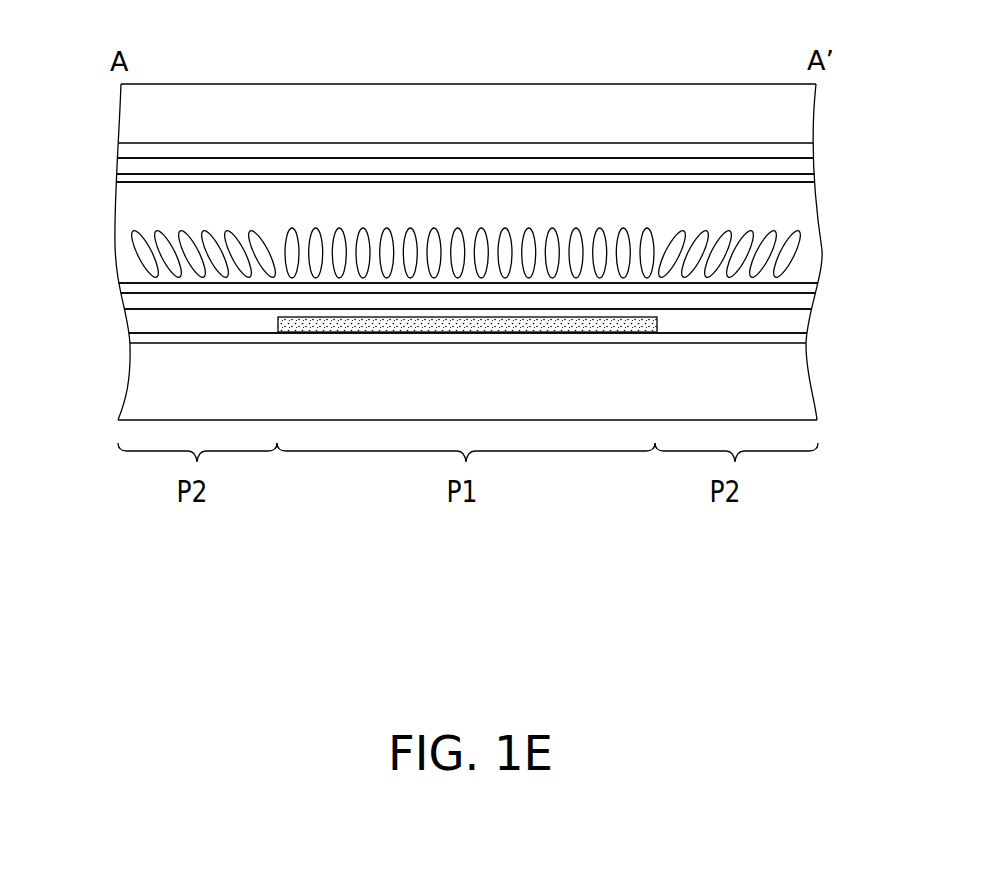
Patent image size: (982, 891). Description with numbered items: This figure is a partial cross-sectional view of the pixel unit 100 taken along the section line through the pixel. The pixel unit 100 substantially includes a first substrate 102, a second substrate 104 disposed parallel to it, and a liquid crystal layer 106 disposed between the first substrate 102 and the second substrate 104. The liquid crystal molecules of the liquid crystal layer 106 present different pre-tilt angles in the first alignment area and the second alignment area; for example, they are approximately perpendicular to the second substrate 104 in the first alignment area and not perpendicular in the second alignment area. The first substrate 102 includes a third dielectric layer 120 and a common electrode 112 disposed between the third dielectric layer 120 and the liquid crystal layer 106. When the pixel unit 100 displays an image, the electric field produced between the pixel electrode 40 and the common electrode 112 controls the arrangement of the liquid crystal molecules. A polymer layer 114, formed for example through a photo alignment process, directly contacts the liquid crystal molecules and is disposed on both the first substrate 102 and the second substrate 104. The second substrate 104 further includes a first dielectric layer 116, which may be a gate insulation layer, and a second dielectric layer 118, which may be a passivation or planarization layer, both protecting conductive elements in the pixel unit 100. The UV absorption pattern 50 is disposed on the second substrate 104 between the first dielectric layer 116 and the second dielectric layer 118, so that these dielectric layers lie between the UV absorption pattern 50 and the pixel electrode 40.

The pixel unit 100 is at (860, 565).
The first substrate 102 is at (826, 82).
The second substrate 104 is at (826, 292).
The liquid crystal layer 106 is at (140, 202).
The common electrode 112 is at (138, 166).
The polymer layer 114 is at (128, 178).
The first dielectric layer 116 is at (137, 341).
The second dielectric layer 118 is at (127, 320).
The third dielectric layer 120 is at (158, 147).
The pixel electrode 40 is at (126, 301).
The UV absorption pattern 50 is at (358, 323).